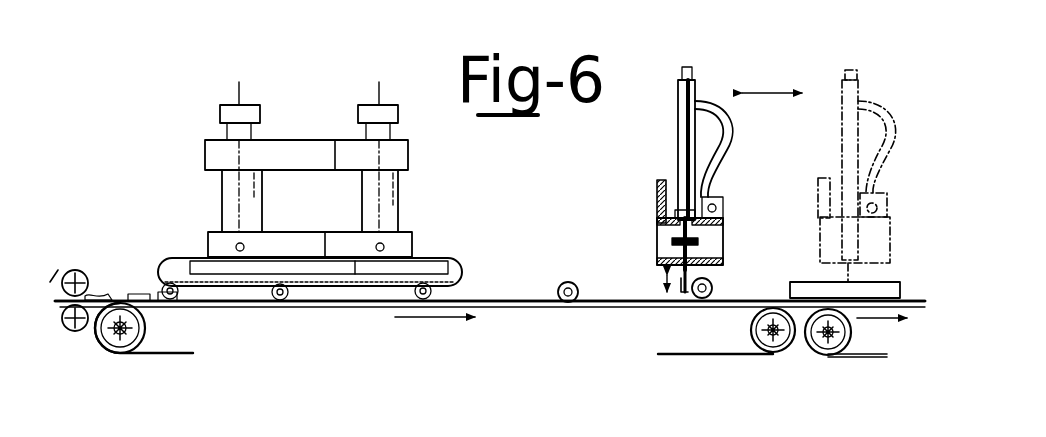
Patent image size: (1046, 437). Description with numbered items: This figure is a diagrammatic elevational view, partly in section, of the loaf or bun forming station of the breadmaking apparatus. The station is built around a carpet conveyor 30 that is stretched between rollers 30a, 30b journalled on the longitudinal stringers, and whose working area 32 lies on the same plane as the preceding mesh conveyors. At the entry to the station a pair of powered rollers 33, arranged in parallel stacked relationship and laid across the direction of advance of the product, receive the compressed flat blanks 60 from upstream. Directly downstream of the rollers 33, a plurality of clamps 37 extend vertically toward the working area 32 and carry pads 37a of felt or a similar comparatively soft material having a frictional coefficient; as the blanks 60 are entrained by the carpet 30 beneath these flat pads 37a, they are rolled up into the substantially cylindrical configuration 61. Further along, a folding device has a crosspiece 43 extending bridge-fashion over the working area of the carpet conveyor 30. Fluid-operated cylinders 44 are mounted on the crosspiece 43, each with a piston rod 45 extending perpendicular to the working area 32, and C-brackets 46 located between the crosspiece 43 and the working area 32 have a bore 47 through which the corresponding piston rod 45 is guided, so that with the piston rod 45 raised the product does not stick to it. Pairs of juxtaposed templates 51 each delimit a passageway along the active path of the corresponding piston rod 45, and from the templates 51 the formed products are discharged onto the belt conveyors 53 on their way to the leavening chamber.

The carpet conveyor 30 is at (187, 356).
The roller 30a is at (130, 343).
The roller 30b is at (770, 346).
The working area 32 is at (517, 300).
The pair of rollers 33 is at (84, 270).
The clamps 37 is at (302, 148).
The pads 37a is at (325, 287).
The crosspiece 43 is at (657, 185).
The fluid-operated cylinders 44 is at (673, 95).
The piston rod 45 is at (660, 266).
The C-brackets 46 is at (657, 236).
The bore 47 is at (720, 264).
The templates 51 is at (800, 282).
The belt conveyors 53 is at (830, 357).
The compressed flat blank 60 is at (98, 292).
The substantially cylindrical configuration 61 is at (567, 283).